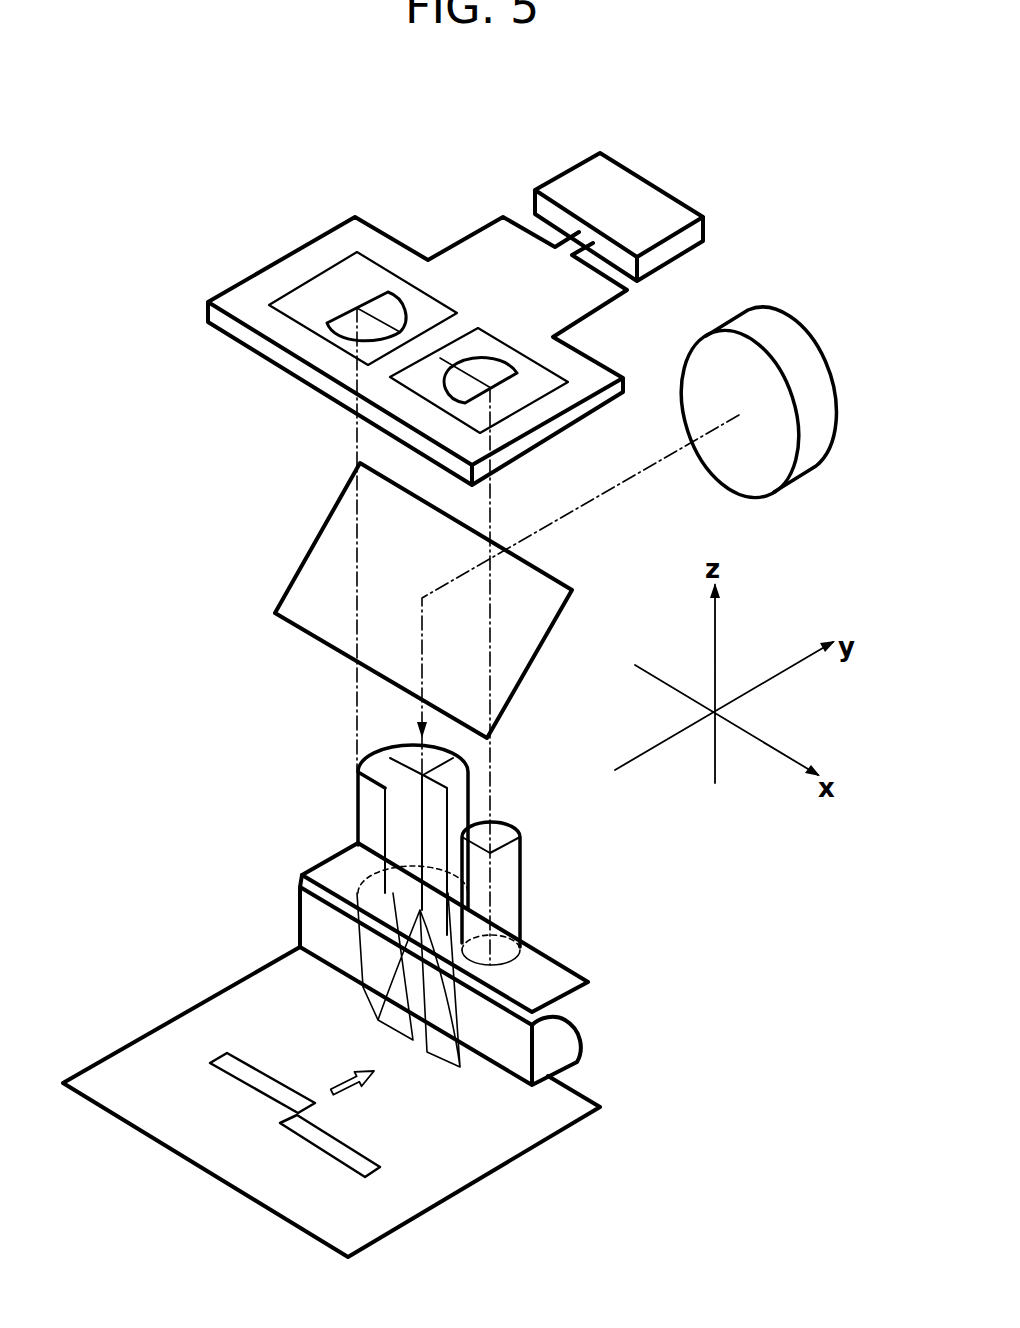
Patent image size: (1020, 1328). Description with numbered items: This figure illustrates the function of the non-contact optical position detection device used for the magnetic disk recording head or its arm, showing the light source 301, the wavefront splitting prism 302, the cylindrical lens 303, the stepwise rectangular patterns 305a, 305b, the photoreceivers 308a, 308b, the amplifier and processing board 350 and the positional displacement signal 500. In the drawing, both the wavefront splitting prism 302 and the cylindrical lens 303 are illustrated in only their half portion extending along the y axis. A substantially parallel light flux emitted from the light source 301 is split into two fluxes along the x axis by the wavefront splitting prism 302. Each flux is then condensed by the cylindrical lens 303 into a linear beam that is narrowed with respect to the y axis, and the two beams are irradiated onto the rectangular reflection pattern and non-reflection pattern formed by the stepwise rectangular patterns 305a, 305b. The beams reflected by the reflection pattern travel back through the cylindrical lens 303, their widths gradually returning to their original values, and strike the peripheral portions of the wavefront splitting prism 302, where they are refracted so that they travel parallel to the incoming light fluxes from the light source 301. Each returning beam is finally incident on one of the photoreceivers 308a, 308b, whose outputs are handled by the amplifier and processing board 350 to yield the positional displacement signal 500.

The positional displacement signal 500 is at (667, 188).
The amplifier and processing board 350 is at (700, 210).
The photoreceiver 308a is at (390, 292).
The photoreceiver 308b is at (500, 362).
The light source 301 is at (800, 487).
The wavefront splitting prism 302 is at (553, 943).
The cylindrical lens 303 is at (582, 1047).
The stepwise rectangular pattern 305a is at (263, 1075).
The stepwise rectangular pattern 305b is at (373, 1158).